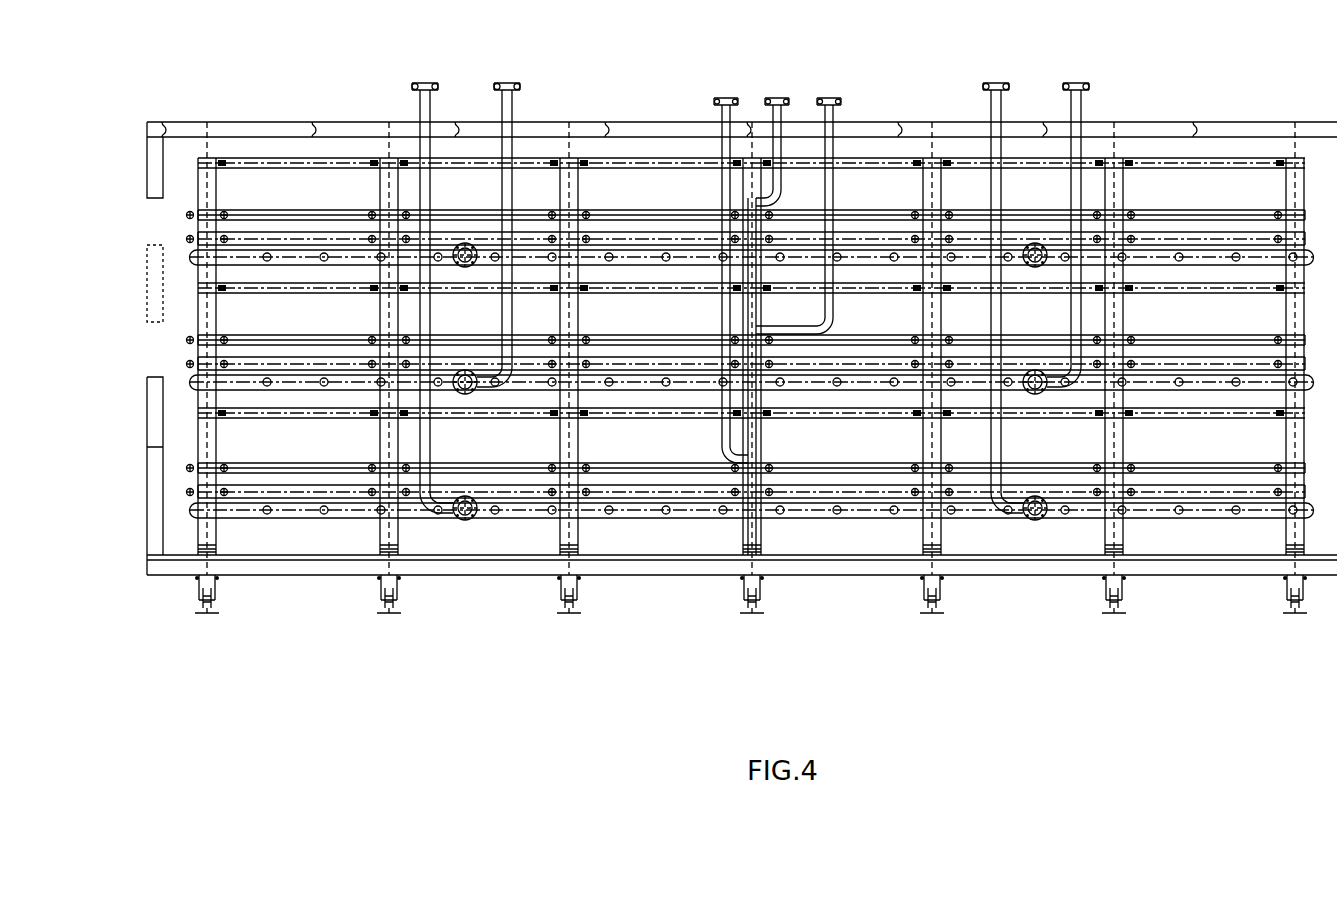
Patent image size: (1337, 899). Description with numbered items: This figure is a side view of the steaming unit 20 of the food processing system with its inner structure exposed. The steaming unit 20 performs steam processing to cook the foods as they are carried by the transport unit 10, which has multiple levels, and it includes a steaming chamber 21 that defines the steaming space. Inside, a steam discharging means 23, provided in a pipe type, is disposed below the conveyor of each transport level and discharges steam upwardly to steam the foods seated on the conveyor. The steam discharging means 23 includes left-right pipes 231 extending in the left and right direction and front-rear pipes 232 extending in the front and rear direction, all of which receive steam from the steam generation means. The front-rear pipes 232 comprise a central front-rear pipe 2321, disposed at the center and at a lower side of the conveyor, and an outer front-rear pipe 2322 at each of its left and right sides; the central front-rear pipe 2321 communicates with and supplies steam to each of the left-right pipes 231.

The transport unit 10 is at (479, 478).
The steaming unit 20 is at (800, 707).
The steaming chamber 21 is at (866, 590).
The steam discharging means 23 is at (750, 464).
The left-right pipes 231 is at (608, 525).
The front-rear pipes 232 is at (751, 450).
The central front-rear pipe 2321 is at (640, 525).
The outer front-rear pipe 2322 is at (692, 499).